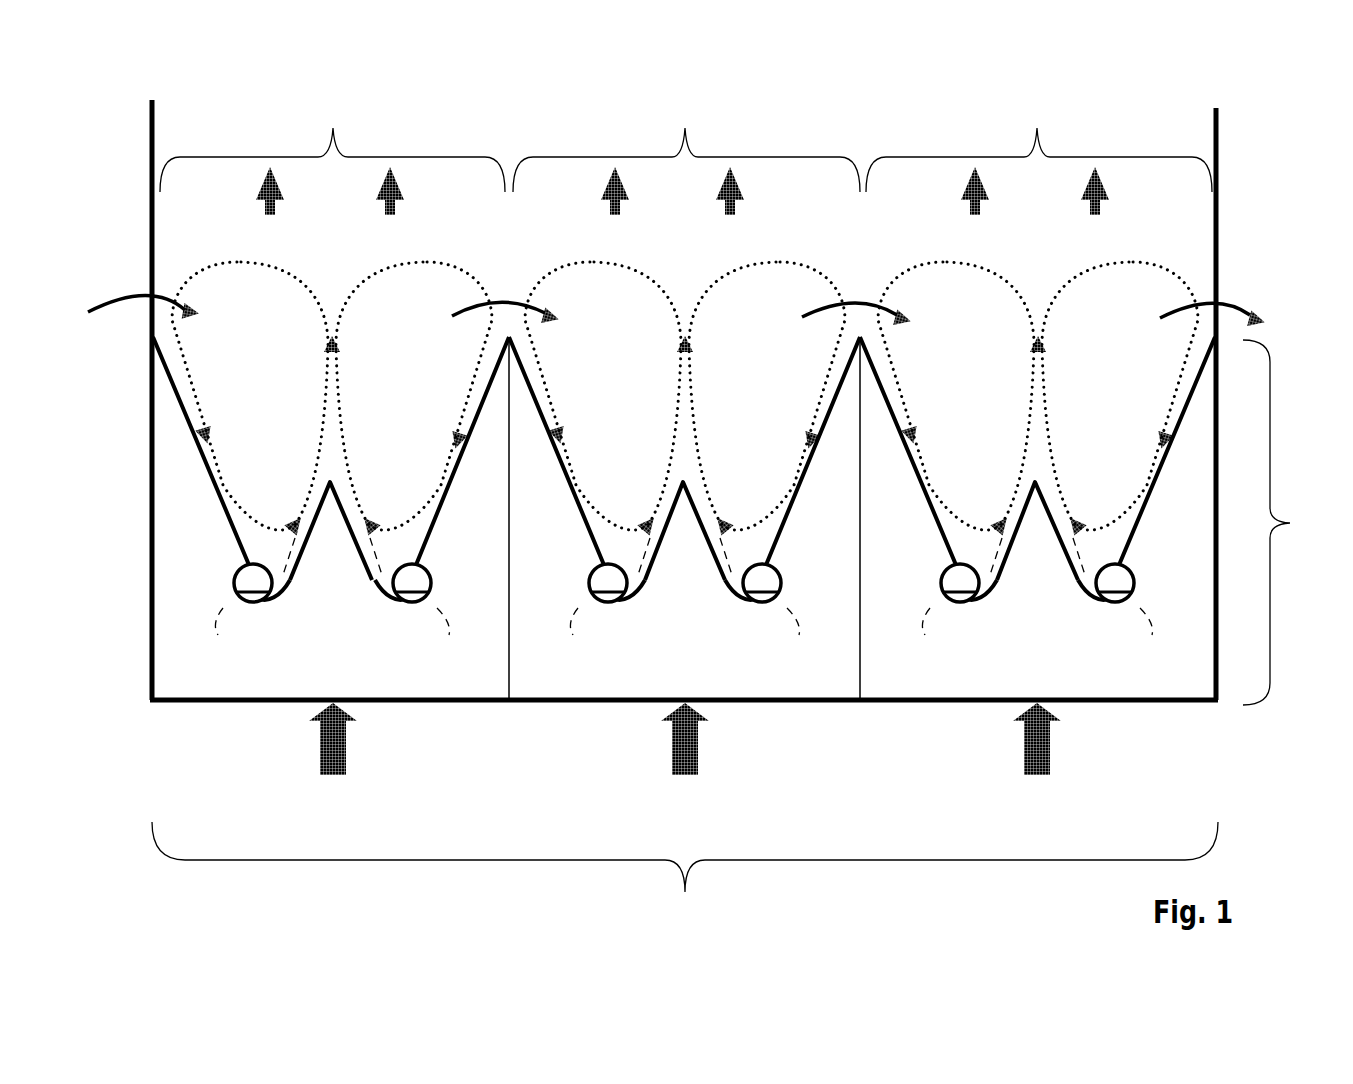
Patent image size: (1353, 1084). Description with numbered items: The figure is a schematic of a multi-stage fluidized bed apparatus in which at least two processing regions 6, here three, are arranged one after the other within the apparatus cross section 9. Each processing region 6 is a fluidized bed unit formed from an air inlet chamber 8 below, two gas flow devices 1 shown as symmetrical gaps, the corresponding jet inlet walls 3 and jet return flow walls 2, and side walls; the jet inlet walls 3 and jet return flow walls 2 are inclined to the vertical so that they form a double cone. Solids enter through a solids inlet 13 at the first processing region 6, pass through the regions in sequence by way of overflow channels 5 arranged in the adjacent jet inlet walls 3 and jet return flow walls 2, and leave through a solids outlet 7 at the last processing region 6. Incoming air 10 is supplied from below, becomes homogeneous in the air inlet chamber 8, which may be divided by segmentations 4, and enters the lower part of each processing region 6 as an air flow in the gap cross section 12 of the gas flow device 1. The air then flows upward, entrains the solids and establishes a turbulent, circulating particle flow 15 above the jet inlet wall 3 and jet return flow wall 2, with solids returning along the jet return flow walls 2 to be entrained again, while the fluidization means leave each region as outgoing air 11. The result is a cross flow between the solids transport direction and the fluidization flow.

The gas flow device 1 is at (235, 588).
The jet return flow wall 2 is at (450, 470).
The jet inlet wall 3 is at (365, 575).
The segmentation 4 is at (509, 617).
The overflow channel 5 is at (517, 297).
The processing region 6 is at (333, 128).
The solids outlet 7 is at (1240, 300).
The air inlet chamber 8 is at (1290, 523).
The apparatus cross section 9 is at (685, 892).
The incoming air 10 is at (708, 739).
The outgoing air 11 is at (682, 197).
The gap cross section 12 is at (215, 625).
The solids inlet 13 is at (139, 291).
The particle flow 15 is at (685, 399).